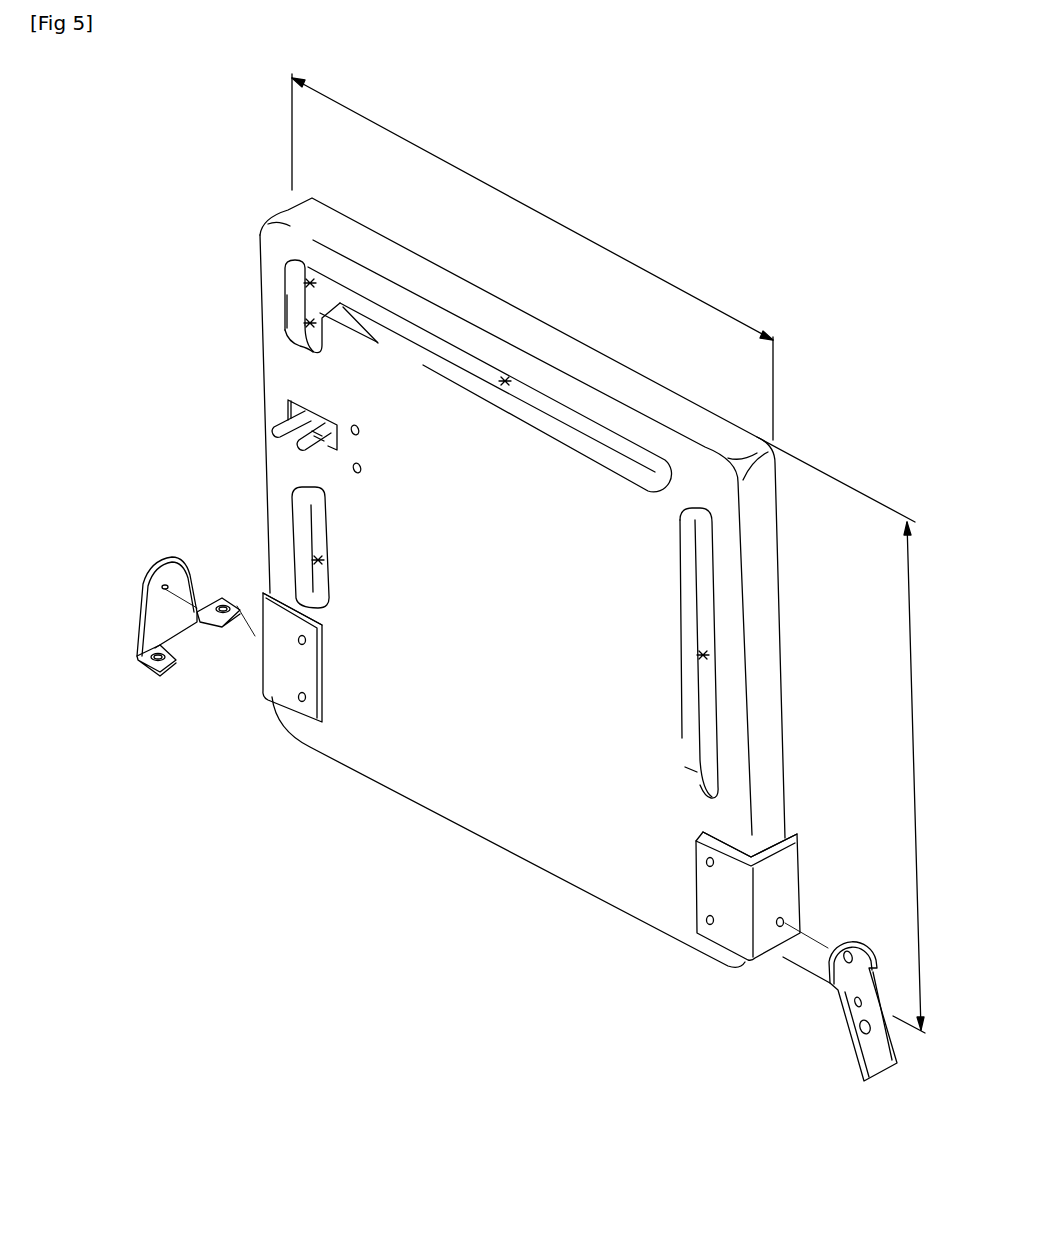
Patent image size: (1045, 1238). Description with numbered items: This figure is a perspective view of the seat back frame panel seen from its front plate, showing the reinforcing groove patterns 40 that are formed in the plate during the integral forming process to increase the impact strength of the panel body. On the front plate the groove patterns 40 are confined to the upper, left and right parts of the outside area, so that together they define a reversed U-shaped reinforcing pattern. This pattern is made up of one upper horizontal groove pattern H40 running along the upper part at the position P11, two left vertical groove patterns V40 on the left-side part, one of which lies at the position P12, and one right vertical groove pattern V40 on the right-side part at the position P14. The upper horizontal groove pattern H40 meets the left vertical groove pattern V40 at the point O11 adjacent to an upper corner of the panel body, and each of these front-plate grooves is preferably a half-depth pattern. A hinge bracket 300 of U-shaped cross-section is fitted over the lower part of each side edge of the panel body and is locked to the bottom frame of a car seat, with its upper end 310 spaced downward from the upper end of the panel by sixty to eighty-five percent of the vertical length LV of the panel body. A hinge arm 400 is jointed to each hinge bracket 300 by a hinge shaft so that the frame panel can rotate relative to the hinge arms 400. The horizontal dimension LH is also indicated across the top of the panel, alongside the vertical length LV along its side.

The groove pattern 40 is at (565, 415).
The horizontal groove pattern H40 is at (468, 360).
The vertical groove pattern V40 is at (306, 308).
The point O11 is at (310, 283).
The position P11 is at (505, 383).
The position P12 is at (310, 324).
The position P14 is at (703, 655).
The hinge bracket 300 is at (265, 682).
The upper end of the hinge bracket 310 is at (266, 592).
The hinge arm 400 is at (130, 591).
The horizontal length dimension LH is at (532, 257).
The vertical length LV is at (846, 735).